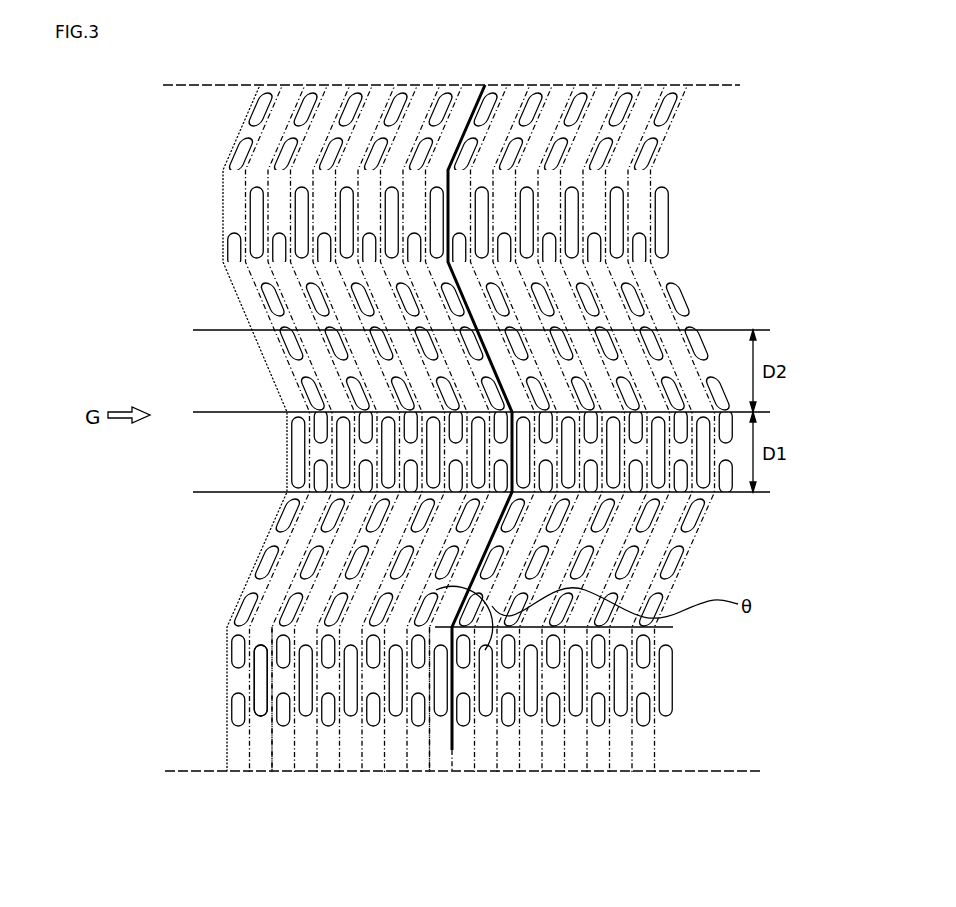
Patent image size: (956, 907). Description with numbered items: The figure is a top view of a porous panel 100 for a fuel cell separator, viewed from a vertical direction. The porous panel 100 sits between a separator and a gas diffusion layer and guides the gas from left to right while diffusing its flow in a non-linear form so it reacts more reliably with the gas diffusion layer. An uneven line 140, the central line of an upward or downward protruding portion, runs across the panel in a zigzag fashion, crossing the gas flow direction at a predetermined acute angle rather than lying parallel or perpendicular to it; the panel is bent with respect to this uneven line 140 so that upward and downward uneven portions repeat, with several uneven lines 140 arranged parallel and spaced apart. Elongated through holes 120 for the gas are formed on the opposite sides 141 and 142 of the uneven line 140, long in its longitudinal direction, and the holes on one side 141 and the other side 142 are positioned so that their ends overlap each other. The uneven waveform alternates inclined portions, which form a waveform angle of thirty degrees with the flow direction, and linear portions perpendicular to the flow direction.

The porous panel 100 is at (178, 192).
The through holes 120 is at (255, 687).
The uneven line 140 is at (272, 750).
The one side of the uneven line 141 is at (465, 767).
The other side of the uneven line 142 is at (440, 760).